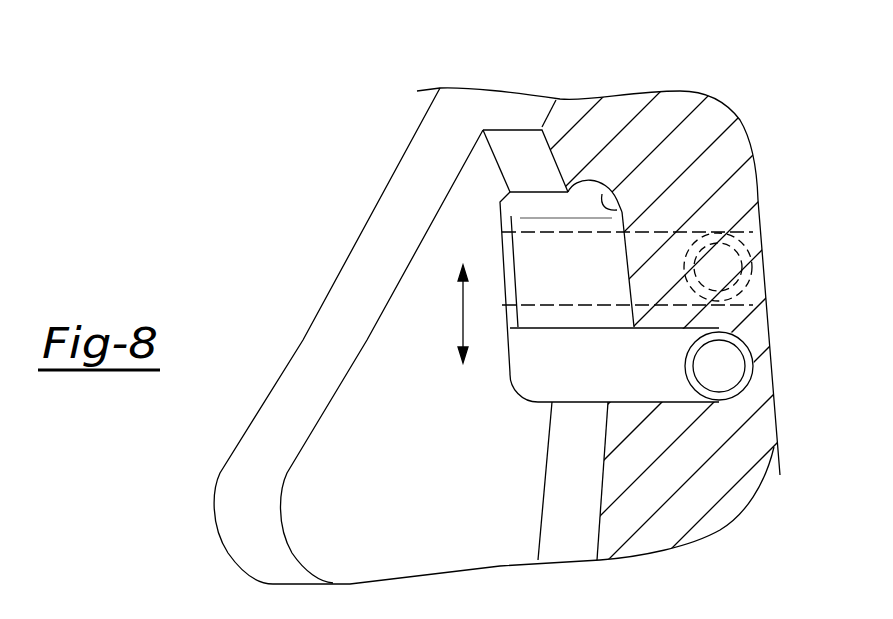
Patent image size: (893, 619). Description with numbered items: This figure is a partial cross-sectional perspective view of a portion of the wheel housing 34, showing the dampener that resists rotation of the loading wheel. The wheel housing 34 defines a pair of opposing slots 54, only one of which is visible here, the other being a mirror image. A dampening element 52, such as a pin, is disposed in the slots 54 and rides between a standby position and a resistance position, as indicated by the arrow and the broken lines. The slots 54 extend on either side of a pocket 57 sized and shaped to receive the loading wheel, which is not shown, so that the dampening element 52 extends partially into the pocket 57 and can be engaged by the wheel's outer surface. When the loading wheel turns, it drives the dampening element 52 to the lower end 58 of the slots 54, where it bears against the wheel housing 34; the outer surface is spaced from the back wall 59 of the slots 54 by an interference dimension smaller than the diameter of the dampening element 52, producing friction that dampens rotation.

The wheel housing 34 is at (735, 72).
The dampening element 52 is at (717, 363).
The slots 54 is at (510, 215).
The pocket 57 is at (495, 385).
The lower end 58 is at (545, 402).
The back wall 59 is at (622, 210).